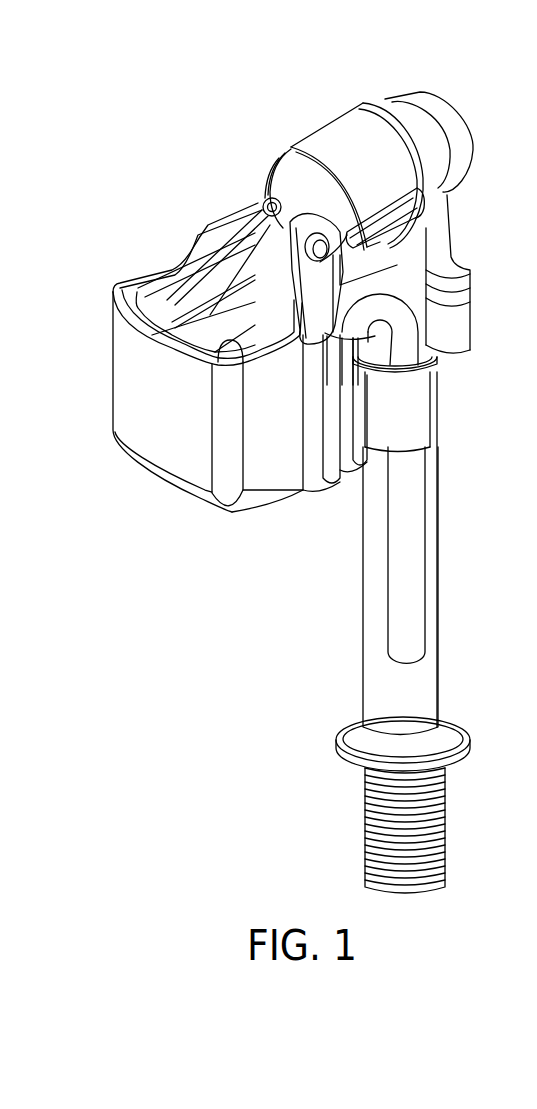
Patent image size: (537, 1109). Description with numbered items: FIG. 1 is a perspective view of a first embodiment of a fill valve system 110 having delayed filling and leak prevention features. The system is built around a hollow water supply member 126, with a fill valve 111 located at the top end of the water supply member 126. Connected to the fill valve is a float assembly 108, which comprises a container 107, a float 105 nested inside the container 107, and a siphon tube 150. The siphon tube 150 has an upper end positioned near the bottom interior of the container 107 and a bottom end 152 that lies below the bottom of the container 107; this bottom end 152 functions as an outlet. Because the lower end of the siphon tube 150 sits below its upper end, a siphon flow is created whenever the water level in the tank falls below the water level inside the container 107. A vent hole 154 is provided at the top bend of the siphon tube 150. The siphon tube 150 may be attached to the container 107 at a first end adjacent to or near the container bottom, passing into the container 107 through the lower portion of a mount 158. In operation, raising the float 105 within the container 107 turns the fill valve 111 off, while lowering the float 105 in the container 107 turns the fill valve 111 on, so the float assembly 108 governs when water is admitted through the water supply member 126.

The fill valve system 110 is at (210, 120).
The fill valve 111 is at (346, 130).
The float 105 is at (222, 267).
The container 107 is at (130, 392).
The float assembly 108 is at (160, 517).
The vent hole 154 is at (397, 302).
The mount 158 is at (418, 420).
The siphon tube 150 is at (418, 507).
The water supply member 126 is at (440, 583).
The bottom end 152 is at (408, 663).